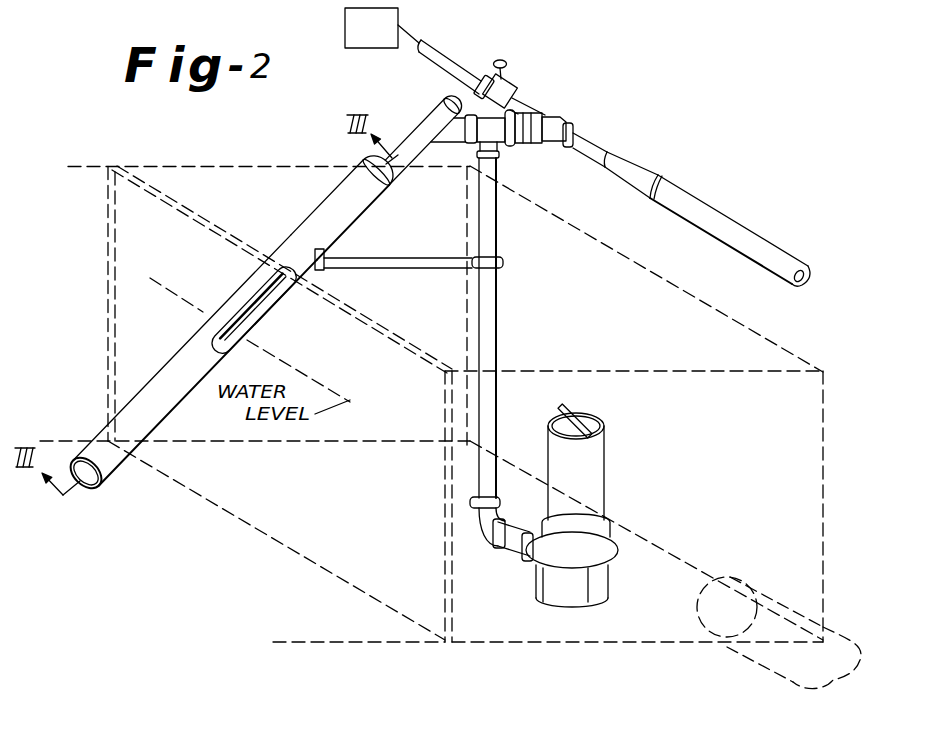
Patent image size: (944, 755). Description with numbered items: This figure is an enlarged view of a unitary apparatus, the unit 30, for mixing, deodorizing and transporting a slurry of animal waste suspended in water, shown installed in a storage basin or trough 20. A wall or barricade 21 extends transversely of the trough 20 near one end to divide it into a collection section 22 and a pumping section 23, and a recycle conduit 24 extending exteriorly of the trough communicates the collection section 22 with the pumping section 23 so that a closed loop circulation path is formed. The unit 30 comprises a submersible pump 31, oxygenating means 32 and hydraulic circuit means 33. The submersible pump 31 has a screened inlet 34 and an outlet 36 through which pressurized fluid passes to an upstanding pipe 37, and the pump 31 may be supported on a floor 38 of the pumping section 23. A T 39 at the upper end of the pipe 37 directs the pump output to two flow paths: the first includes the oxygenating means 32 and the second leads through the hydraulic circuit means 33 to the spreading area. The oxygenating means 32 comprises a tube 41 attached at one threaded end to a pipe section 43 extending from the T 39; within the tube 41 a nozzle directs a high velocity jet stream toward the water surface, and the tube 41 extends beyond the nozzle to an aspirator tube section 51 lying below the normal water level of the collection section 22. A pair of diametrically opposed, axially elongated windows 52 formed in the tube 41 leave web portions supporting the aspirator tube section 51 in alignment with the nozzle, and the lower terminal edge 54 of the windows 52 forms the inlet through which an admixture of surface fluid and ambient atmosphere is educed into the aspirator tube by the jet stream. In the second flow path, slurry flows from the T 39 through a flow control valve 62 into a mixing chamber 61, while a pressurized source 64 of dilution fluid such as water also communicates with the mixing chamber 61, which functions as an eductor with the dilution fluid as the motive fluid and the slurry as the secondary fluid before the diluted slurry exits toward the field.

The storage basin or trough 20 is at (767, 340).
The wall or barricade 21 is at (380, 340).
The collection section 22 is at (352, 633).
The pumping section 23 is at (670, 298).
The recycle conduit 24 is at (770, 662).
The unit 30 is at (581, 121).
The submersible pump 31 is at (588, 475).
The oxygenating means 32 is at (293, 220).
The hydraulic circuit means 33 is at (556, 108).
The screened inlet 34 is at (598, 589).
The outlet 36 is at (531, 563).
The upstanding pipe 37 is at (489, 338).
The floor 38 is at (503, 633).
The T 39 is at (494, 133).
The tube 41 is at (352, 205).
The pipe section 43 is at (411, 155).
The aspirator tube section 51 is at (103, 470).
The windows 52 is at (212, 332).
The lower terminal edge 54 is at (226, 352).
The mixing chamber 61 is at (577, 133).
The flow control valve 62 is at (543, 149).
The pressurized source 64 is at (373, 38).